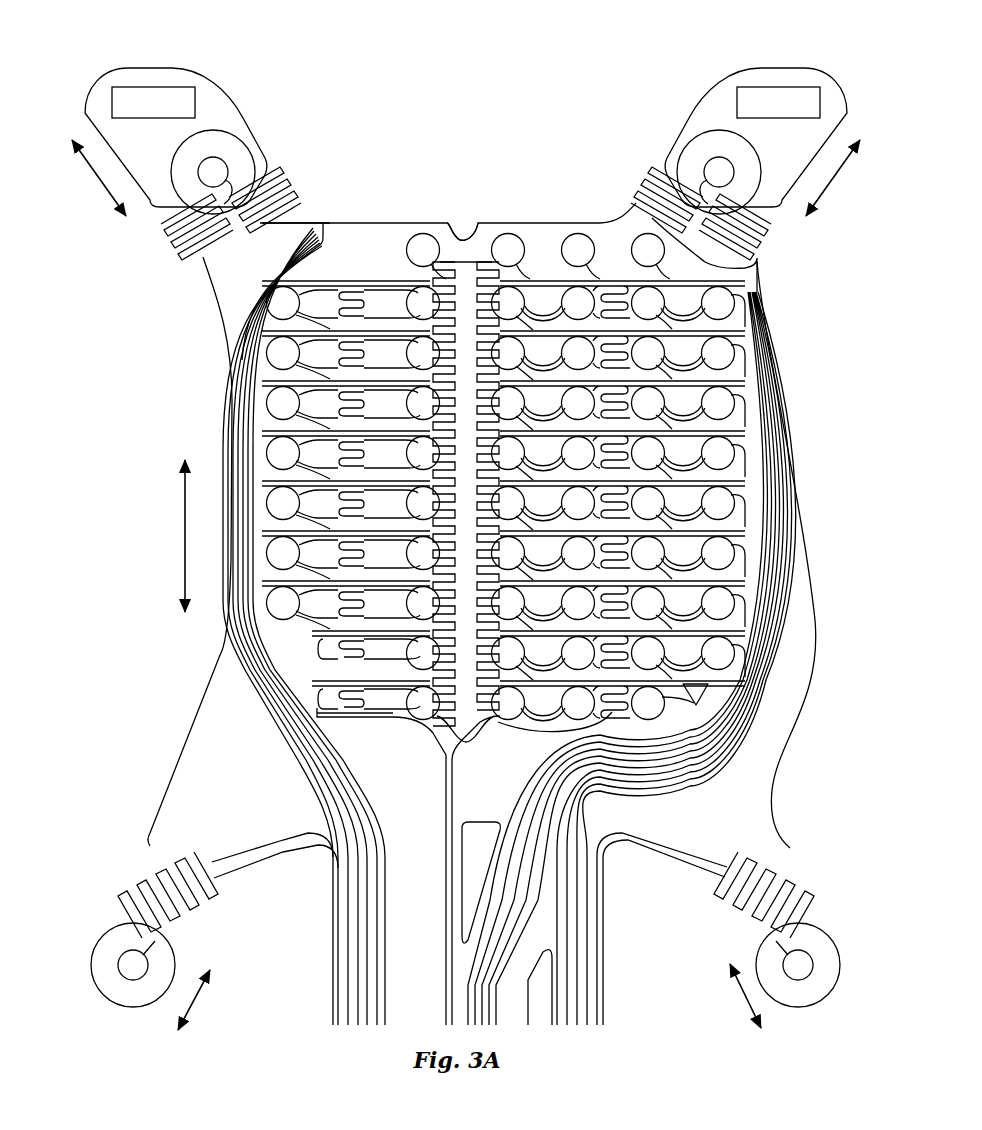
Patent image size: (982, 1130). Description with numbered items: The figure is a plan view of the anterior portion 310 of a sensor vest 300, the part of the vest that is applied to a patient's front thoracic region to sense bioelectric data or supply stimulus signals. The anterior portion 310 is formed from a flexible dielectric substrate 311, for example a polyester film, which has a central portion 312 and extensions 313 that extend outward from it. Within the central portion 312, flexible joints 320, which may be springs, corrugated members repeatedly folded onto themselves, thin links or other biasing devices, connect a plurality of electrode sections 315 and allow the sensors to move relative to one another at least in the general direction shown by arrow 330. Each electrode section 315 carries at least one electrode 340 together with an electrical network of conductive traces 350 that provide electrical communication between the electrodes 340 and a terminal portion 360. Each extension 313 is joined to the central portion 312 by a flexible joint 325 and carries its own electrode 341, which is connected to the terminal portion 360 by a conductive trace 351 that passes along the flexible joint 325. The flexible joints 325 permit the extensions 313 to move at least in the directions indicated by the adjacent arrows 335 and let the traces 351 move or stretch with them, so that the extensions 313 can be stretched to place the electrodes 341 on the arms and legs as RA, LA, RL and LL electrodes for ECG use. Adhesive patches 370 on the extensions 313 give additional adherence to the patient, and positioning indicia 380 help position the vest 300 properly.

The sensor vest 300 is at (592, 67).
The anterior portion 310 is at (367, 86).
The flexible dielectric substrate 311 is at (330, 224).
The central portion 312 is at (492, 152).
The extensions 313 is at (238, 110).
The electrode sections 315 is at (410, 440).
The flexible joints 320 is at (360, 262).
The flexible joints 325 is at (300, 180).
The arrow 330 is at (184, 535).
The arrows 335 is at (99, 182).
The electrodes 340 is at (432, 235).
The electrode 341 is at (220, 165).
The conductive traces 350 is at (332, 772).
The conductive trace 351 is at (760, 278).
The terminal portion 360 is at (346, 1023).
The adhesive patches 370 is at (185, 107).
The positioning indicia 380 is at (462, 240).